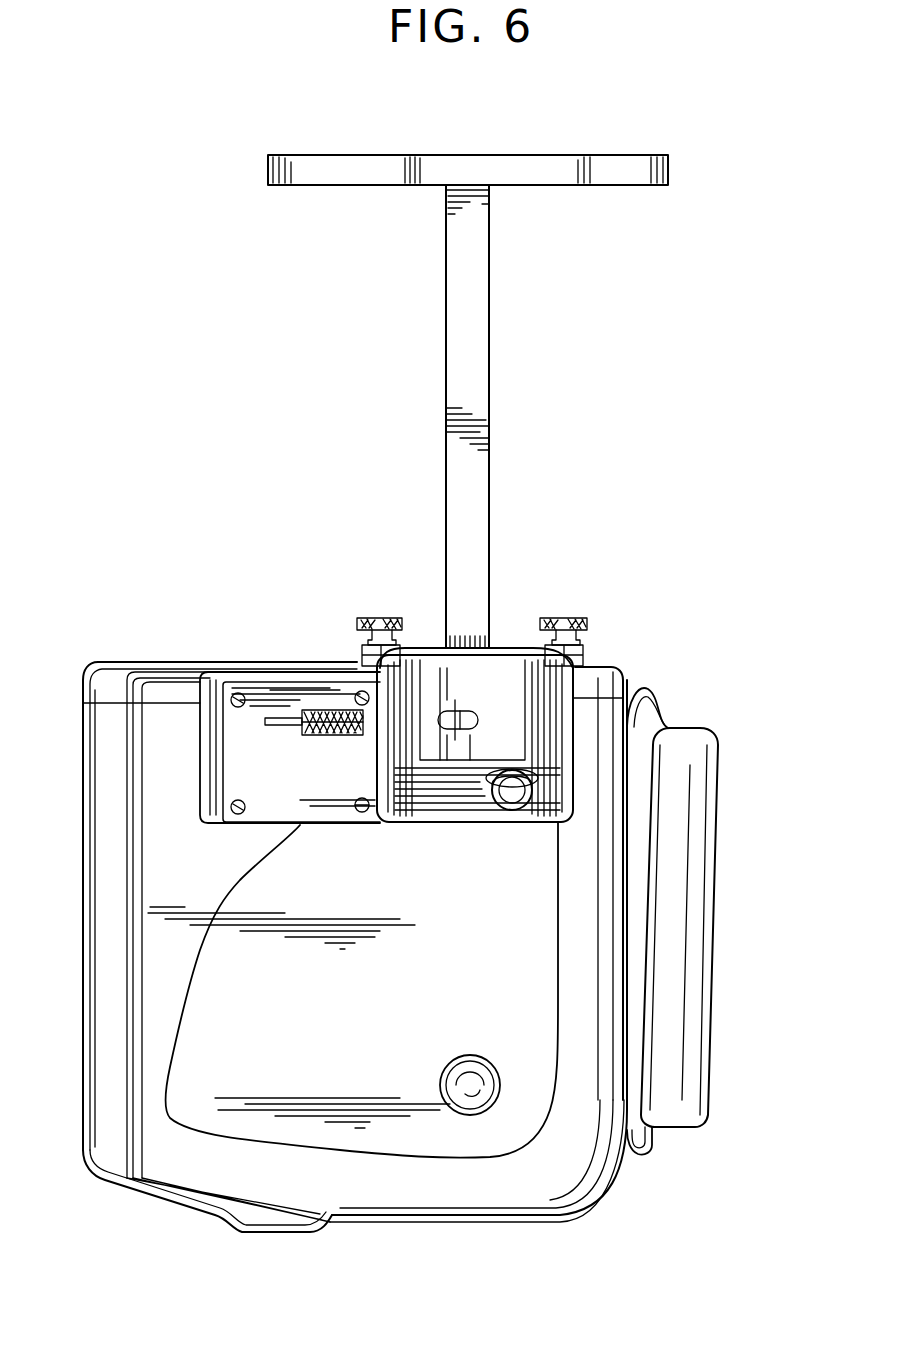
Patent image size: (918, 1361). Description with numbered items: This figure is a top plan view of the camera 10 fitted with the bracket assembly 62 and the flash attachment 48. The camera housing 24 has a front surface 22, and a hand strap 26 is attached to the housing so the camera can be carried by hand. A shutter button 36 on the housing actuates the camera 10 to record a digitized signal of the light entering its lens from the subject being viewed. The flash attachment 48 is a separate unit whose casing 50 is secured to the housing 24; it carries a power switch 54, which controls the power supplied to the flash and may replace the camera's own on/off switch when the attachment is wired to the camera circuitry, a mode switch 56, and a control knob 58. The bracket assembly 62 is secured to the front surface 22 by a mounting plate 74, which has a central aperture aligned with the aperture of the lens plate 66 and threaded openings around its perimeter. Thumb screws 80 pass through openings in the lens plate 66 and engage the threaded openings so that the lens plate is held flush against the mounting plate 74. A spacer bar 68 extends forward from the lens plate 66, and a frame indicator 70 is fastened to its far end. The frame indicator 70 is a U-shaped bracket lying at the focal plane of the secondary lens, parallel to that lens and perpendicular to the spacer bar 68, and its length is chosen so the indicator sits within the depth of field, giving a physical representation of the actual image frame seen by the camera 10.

The camera 10 is at (698, 712).
The front surface 22 is at (156, 680).
The camera housing 24 is at (545, 1210).
The hand strap 26 is at (712, 946).
The shutter button 36 is at (446, 1080).
The flash attachment 48 is at (256, 828).
The casing 50 is at (288, 825).
The power switch 54 is at (332, 740).
The mode switch 56 is at (450, 713).
The control knob 58 is at (508, 799).
The bracket assembly 62 is at (446, 367).
The lens plate 66 is at (405, 658).
The spacer bar 68 is at (484, 352).
The frame indicator 70 is at (370, 157).
The mounting plate 74 is at (583, 661).
The thumb screws 80 is at (373, 618).